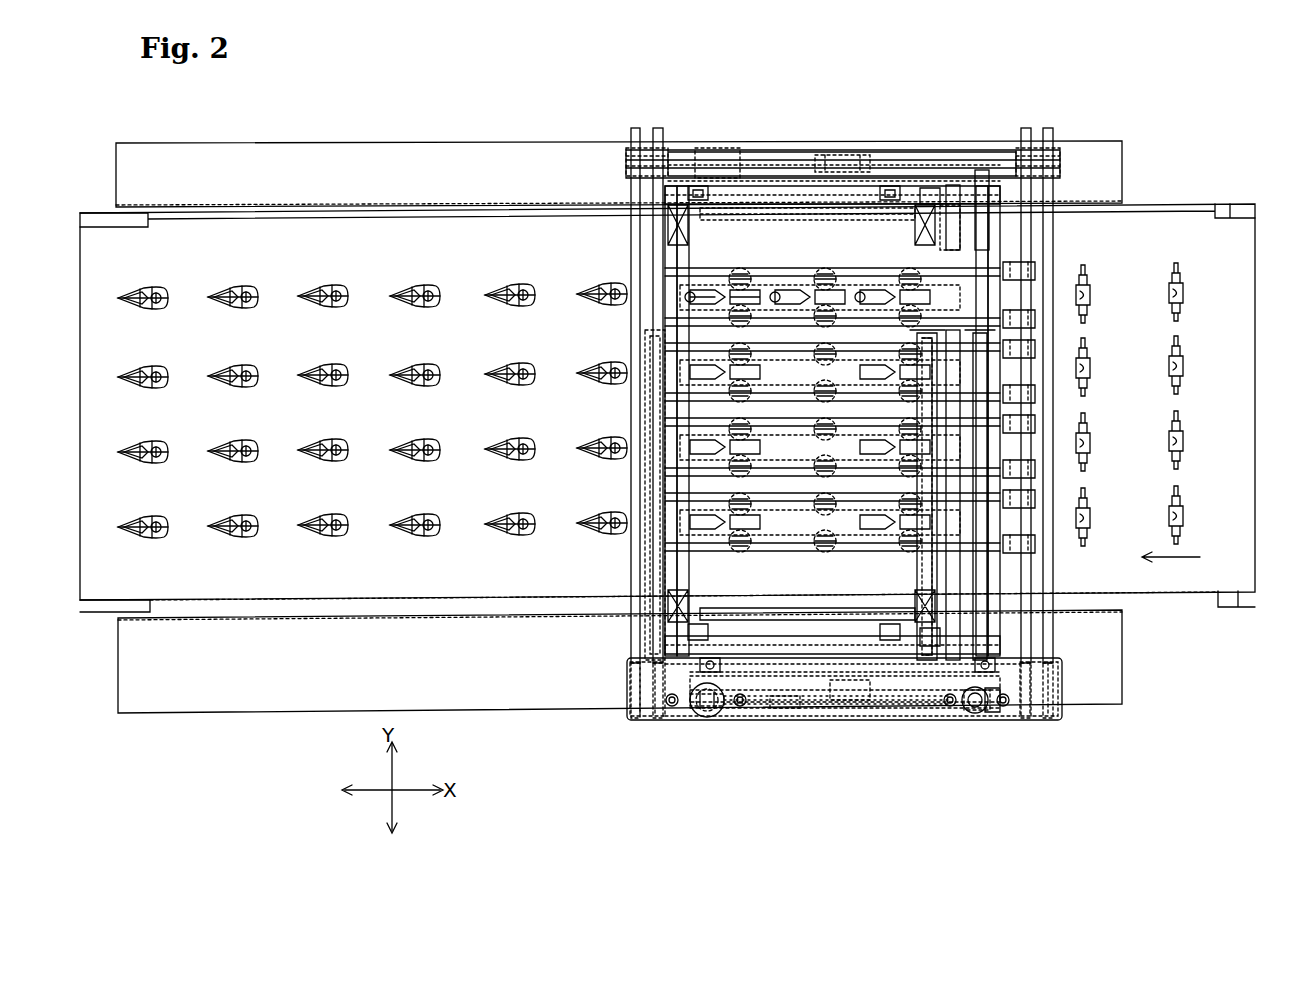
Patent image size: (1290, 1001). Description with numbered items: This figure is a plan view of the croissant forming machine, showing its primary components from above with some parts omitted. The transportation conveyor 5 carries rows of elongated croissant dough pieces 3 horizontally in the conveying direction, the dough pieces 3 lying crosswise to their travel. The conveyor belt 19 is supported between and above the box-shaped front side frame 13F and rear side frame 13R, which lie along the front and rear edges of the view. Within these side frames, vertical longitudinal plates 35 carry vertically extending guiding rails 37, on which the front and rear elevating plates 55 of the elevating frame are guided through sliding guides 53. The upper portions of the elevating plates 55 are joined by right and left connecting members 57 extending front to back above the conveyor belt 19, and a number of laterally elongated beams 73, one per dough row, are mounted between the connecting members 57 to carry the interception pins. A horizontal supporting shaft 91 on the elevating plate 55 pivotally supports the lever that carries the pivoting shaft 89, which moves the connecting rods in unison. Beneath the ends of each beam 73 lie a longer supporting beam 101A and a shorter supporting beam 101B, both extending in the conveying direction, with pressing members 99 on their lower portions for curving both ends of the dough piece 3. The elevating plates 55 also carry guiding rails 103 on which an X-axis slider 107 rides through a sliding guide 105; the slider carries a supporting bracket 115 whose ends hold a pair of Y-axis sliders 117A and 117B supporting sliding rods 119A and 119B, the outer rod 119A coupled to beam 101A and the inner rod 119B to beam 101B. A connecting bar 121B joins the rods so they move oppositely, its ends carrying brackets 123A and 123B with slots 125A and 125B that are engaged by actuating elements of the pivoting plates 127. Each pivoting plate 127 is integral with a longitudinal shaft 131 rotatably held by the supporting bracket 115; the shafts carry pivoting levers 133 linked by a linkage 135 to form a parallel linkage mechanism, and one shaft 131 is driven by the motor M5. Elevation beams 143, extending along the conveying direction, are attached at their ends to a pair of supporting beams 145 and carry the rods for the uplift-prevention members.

The croissant dough piece 3 is at (326, 540).
The transportation conveyor 5 is at (1242, 178).
The rear side frame 13R is at (228, 170).
The front side frame 13F is at (250, 702).
The conveyor belt 19 is at (458, 592).
The longitudinal plate 35 is at (790, 220).
The guiding rail 37 is at (686, 236).
The sliding guide 53 is at (706, 200).
The elevating plate 55 is at (926, 186).
The connecting member 57 is at (972, 200).
The beam 73 is at (665, 295).
The pivoting shaft 89 is at (975, 185).
The horizontal supporting shaft 91 is at (950, 185).
The pressing member 99 is at (944, 240).
The supporting beam 101A is at (1020, 268).
The supporting beam 101B is at (1015, 320).
The guiding rail 103 is at (882, 162).
The sliding guide 105 is at (842, 152).
The X-axis slider 107 is at (760, 150).
The supporting bracket 115 is at (718, 162).
The Y-axis slider 117A is at (634, 140).
The Y-axis slider 117B is at (657, 140).
The sliding rod 119A is at (650, 557).
The sliding rod 119B is at (650, 590).
The connecting bar 121B is at (808, 722).
The bracket 123A is at (672, 708).
The bracket 123B is at (740, 708).
The slot 125A is at (965, 712).
The slot 125B is at (998, 714).
The pivoting plate 127 is at (690, 708).
The longitudinal shaft 131 is at (707, 718).
The pivoting lever 133 is at (655, 716).
The linkage 135 is at (800, 702).
The elevation beam 143 is at (700, 375).
The supporting beam 145 is at (900, 158).
The motor M5 is at (738, 718).